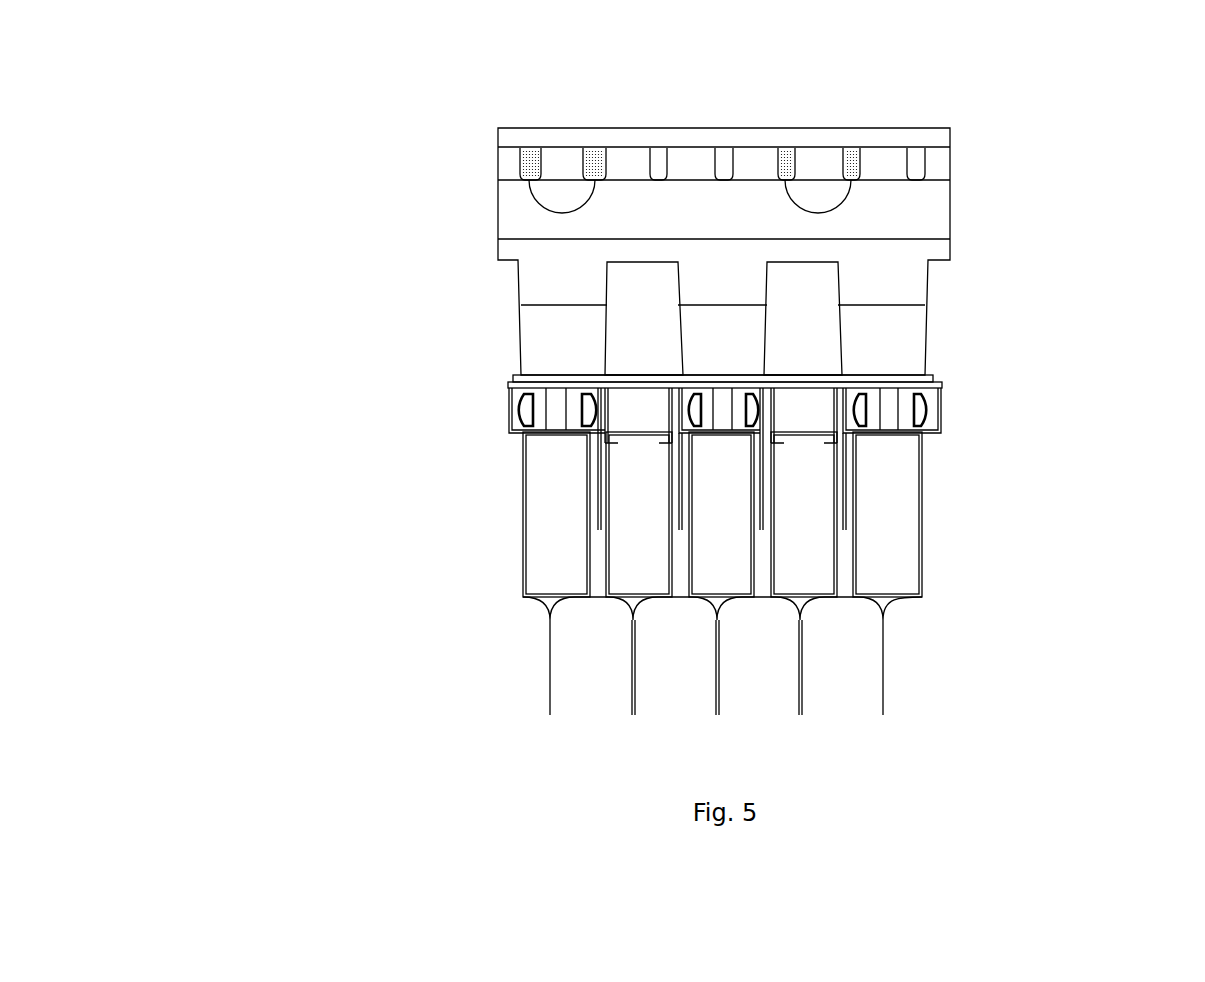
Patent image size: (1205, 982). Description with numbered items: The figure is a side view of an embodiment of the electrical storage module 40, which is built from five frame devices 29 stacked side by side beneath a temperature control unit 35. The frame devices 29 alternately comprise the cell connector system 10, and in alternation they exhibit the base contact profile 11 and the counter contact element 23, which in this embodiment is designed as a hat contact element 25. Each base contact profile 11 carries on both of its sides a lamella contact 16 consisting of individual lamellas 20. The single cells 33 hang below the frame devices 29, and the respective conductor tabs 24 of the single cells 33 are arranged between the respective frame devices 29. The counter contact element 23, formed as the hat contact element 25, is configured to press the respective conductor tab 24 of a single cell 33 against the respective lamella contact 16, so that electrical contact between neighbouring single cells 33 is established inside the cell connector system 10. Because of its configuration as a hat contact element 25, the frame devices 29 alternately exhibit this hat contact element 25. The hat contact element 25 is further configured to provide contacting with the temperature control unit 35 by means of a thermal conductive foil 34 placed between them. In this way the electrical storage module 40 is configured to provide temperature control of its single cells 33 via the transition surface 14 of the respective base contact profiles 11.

The cell connector system 10 is at (501, 422).
The base contact profile 11 is at (520, 373).
The transition surface 14 is at (872, 379).
The lamella contact 16 is at (672, 538).
The lamellas 20 is at (586, 413).
The counter contact element 23 is at (775, 449).
The conductor tab 24 is at (843, 443).
The hat contact element 25 is at (512, 386).
The frame device 29 is at (899, 503).
The single cell 33 is at (856, 679).
The thermal conductive foil 34 is at (556, 378).
The temperature control unit 35 is at (527, 286).
The electrical storage module 40 is at (396, 485).